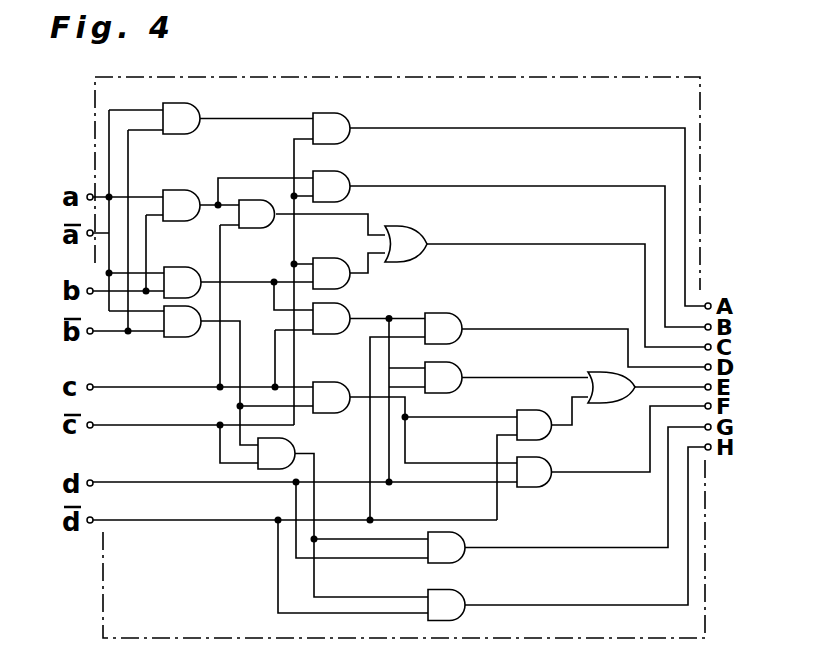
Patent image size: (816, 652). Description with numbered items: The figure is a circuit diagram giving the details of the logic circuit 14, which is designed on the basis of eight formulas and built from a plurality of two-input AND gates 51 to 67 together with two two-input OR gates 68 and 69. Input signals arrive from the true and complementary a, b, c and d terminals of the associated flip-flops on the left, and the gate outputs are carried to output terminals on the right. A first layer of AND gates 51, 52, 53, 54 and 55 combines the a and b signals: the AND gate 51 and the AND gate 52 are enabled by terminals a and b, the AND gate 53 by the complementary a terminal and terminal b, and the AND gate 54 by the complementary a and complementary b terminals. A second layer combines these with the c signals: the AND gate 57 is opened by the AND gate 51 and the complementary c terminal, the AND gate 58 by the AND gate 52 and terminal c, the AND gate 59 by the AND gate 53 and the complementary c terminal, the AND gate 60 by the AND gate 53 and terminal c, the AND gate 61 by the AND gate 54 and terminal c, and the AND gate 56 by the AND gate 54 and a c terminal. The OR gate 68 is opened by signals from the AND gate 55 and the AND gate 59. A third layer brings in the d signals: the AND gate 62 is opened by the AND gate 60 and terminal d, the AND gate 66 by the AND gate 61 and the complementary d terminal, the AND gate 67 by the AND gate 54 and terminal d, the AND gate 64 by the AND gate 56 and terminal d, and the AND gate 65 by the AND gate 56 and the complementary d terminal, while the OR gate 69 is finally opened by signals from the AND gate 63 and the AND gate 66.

The logic circuit 14 is at (652, 77).
The AND gate 51 is at (188, 110).
The AND gate 52 is at (190, 197).
The AND gate 53 is at (190, 272).
The AND gate 54 is at (188, 334).
The AND gate 55 is at (256, 226).
The AND gate 56 is at (277, 446).
The AND gate 57 is at (338, 120).
The AND gate 58 is at (338, 180).
The AND gate 59 is at (334, 264).
The AND gate 60 is at (336, 311).
The AND gate 61 is at (334, 389).
The AND gate 62 is at (446, 322).
The AND gate 63 is at (448, 372).
The AND gate 64 is at (452, 541).
The AND gate 65 is at (452, 596).
The AND gate 66 is at (545, 404).
The AND gate 67 is at (546, 470).
The OR gate 68 is at (410, 233).
The OR gate 69 is at (612, 398).